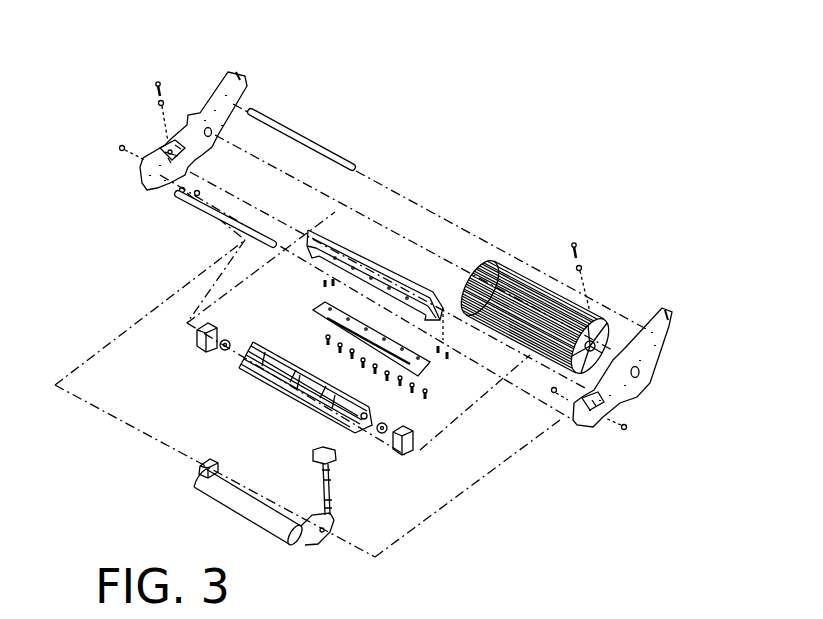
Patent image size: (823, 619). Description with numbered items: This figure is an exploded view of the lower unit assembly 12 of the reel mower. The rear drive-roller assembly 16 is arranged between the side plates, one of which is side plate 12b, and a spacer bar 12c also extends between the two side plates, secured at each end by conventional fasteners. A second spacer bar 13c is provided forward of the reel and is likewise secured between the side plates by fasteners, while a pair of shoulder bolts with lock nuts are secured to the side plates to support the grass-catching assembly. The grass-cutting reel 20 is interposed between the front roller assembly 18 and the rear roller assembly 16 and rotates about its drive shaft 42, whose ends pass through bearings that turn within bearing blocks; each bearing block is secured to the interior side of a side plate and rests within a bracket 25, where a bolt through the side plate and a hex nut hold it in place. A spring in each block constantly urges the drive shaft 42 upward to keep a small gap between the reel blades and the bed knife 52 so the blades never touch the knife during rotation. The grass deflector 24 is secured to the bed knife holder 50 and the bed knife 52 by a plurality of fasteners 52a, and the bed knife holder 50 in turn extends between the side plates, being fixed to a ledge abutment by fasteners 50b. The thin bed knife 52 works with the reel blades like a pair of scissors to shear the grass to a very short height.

The lower unit assembly 12 is at (598, 130).
The side plate 12b is at (670, 318).
The spacer bar 12c is at (313, 122).
The second spacer bar 13c is at (208, 227).
The rear drive-roller assembly 16 is at (520, 265).
The front roller assembly 18 is at (205, 505).
The grass-cutting reel 20 is at (285, 406).
The grass deflector 24 is at (372, 252).
The bracket 25 is at (158, 153).
The drive shaft 42 is at (366, 416).
The bed knife holder 50 is at (442, 290).
The fasteners 50b is at (450, 362).
The bed knife 52 is at (425, 392).
The fasteners 52a is at (433, 375).